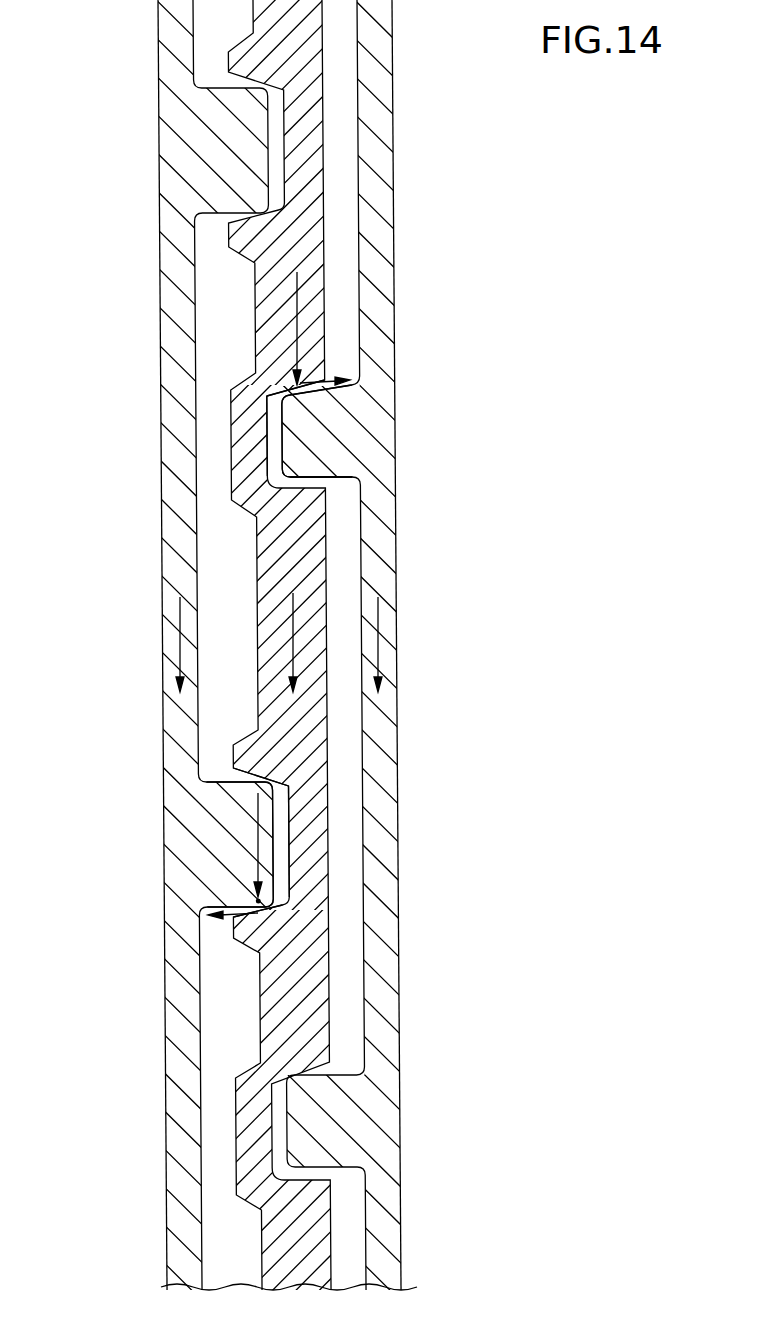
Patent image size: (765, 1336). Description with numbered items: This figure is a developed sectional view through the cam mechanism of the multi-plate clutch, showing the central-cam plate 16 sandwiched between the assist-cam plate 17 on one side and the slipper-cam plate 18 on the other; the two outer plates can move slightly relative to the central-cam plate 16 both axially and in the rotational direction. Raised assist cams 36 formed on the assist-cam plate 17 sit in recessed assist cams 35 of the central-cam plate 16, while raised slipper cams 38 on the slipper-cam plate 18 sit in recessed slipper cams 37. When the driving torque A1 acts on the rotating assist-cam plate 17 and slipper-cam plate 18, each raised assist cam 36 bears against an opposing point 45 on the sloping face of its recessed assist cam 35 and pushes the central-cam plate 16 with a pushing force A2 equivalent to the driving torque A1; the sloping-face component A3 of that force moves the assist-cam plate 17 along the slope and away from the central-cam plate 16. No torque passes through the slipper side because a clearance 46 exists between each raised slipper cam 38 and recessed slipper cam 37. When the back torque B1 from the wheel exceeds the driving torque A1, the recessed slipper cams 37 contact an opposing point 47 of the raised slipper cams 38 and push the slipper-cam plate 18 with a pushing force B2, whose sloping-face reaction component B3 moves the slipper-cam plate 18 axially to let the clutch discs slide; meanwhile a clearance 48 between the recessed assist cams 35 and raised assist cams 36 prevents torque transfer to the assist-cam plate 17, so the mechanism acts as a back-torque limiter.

The central-cam plate 16 is at (297, 545).
The assist-cam plate 17 is at (180, 551).
The slipper-cam plate 18 is at (373, 562).
The recessed assist cam 35 is at (288, 826).
The raised assist cam 36 is at (227, 845).
The recessed slipper cam 37 is at (268, 447).
The raised slipper cam 38 is at (340, 427).
The opposing point 45 is at (258, 915).
The clearance 46 is at (305, 484).
The opposing point 47 is at (300, 397).
The clearance 48 is at (240, 772).
The driving torque A1 is at (180, 642).
The pushing force A2 is at (255, 870).
The sloping-face-direction component of pushing force A3 is at (215, 917).
The back torque B1 is at (290, 648).
The pushing force B2 is at (300, 297).
The sloping-face-direction component of reaction force B3 is at (340, 395).